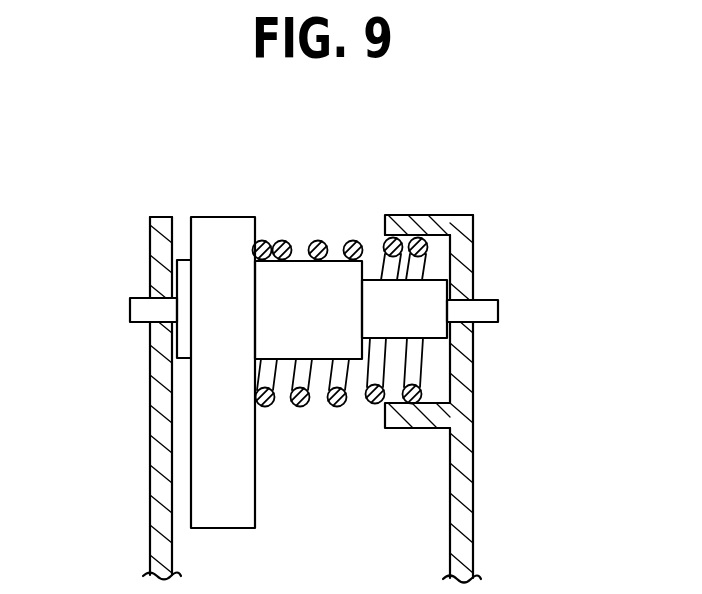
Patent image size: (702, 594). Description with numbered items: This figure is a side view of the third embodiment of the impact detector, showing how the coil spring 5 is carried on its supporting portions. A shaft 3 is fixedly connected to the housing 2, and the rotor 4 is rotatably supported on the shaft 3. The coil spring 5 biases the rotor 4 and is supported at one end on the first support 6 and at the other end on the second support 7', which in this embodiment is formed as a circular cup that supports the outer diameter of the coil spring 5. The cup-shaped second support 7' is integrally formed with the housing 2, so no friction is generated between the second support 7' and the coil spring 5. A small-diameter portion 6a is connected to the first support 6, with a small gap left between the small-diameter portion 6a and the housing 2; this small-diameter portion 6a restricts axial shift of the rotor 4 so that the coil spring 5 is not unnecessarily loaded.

The housing 2 is at (157, 540).
The shaft 3 is at (138, 309).
The rotor 4 is at (222, 233).
The coil spring 5 is at (280, 241).
The first support 6 is at (336, 272).
The small-diameter portion 6a is at (398, 332).
The second support 7' is at (484, 297).